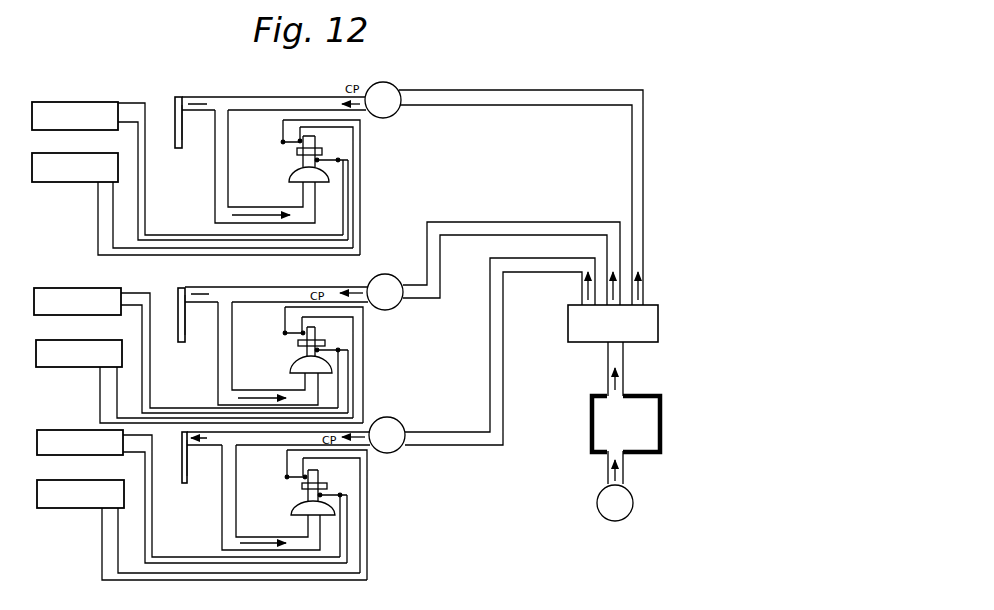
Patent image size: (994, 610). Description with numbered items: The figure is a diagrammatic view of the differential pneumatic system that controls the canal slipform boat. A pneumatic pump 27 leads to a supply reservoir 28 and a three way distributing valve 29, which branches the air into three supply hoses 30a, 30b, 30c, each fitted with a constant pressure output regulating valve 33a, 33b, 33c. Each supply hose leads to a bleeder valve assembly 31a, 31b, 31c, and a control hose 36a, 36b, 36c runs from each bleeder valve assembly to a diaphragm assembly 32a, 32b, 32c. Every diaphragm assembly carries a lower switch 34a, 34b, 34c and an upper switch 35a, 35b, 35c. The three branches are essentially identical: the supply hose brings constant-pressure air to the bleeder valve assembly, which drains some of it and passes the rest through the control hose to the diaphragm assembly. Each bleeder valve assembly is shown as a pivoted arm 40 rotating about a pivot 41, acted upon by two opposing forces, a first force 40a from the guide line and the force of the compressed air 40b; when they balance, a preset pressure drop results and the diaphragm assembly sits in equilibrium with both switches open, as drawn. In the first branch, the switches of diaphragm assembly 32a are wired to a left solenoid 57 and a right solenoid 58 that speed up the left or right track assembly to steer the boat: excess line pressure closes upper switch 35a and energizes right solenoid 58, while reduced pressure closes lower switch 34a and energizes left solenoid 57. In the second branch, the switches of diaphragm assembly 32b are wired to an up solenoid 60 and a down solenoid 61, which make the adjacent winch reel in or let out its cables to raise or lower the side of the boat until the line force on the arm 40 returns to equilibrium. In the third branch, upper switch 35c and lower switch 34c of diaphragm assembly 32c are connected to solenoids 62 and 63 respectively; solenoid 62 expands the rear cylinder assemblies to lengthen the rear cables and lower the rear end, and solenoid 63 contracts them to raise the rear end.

The pneumatic pump 27 is at (633, 506).
The supply reservoir 28 is at (662, 430).
The three way distributing valve 29 is at (658, 338).
The supply hose 30a is at (645, 204).
The supply hose 30b is at (568, 224).
The supply hose 30c is at (522, 275).
The bleeder valve assembly 31a is at (188, 97).
The bleeder valve assembly 31b is at (191, 288).
The bleeder valve assembly 31c is at (178, 468).
The diaphragm assembly 32a is at (292, 176).
The diaphragm assembly 32b is at (293, 365).
The diaphragm assembly 32c is at (298, 505).
The constant pressure output regulating valve 33a is at (397, 90).
The constant pressure output regulating valve 33b is at (387, 274).
The constant pressure output regulating valve 33c is at (400, 427).
The lower switch 34a is at (333, 158).
The lower switch 34b is at (331, 347).
The lower switch 34c is at (333, 492).
The upper switch 35a is at (283, 141).
The upper switch 35b is at (285, 333).
The upper switch 35c is at (287, 476).
The control hose 36a is at (218, 190).
The control hose 36b is at (220, 370).
The control hose 36c is at (222, 509).
The pivoted arm 40 is at (176, 125).
The first force 40a is at (173, 103).
The force of the compressed air 40b is at (208, 100).
The pivot 41 is at (184, 120).
The left solenoid 57 is at (102, 103).
The right solenoid 58 is at (105, 153).
The second solenoid 60 is at (52, 292).
The solenoid 61 is at (50, 343).
The solenoid 62 is at (42, 508).
The solenoid 63 is at (47, 456).